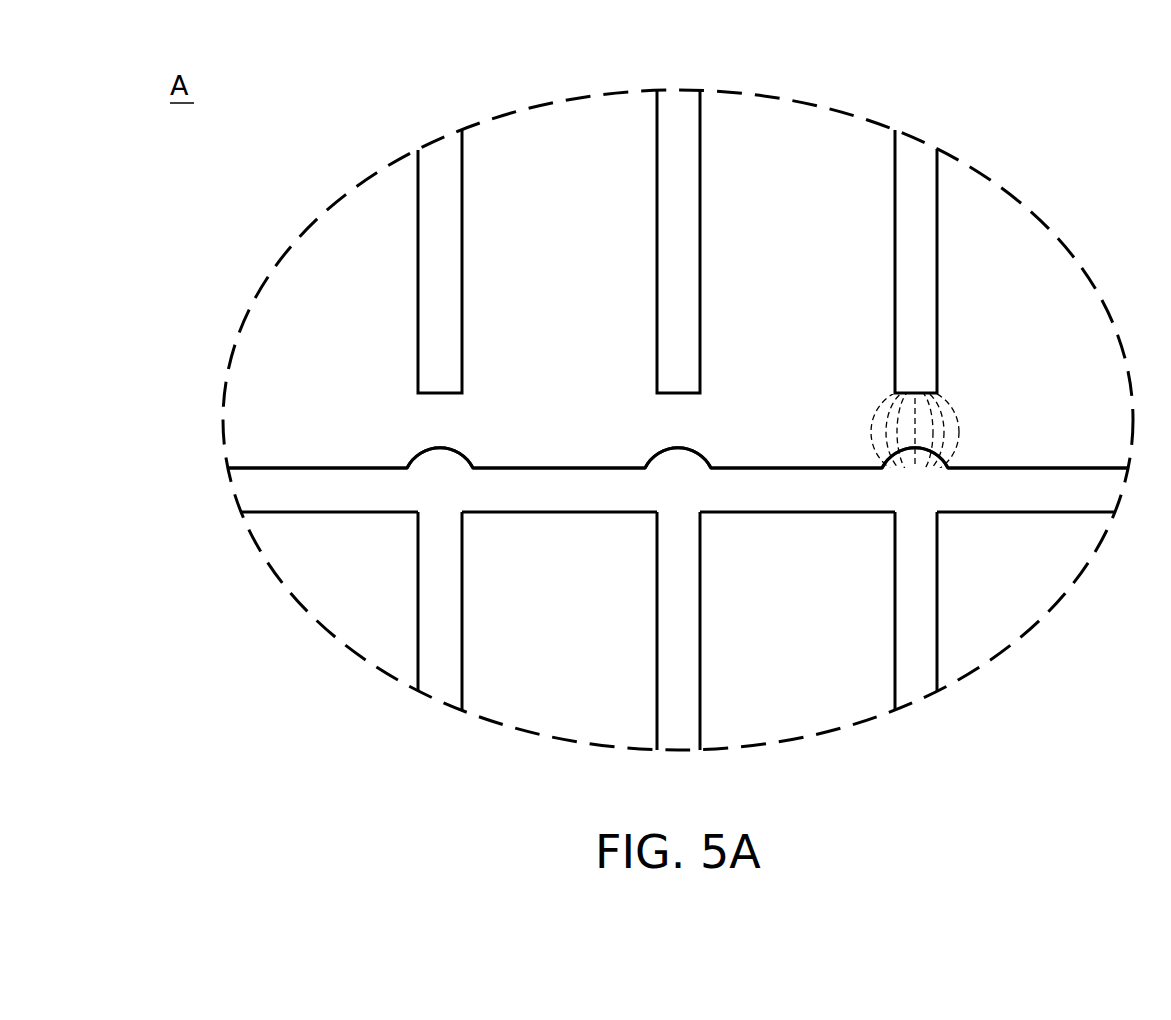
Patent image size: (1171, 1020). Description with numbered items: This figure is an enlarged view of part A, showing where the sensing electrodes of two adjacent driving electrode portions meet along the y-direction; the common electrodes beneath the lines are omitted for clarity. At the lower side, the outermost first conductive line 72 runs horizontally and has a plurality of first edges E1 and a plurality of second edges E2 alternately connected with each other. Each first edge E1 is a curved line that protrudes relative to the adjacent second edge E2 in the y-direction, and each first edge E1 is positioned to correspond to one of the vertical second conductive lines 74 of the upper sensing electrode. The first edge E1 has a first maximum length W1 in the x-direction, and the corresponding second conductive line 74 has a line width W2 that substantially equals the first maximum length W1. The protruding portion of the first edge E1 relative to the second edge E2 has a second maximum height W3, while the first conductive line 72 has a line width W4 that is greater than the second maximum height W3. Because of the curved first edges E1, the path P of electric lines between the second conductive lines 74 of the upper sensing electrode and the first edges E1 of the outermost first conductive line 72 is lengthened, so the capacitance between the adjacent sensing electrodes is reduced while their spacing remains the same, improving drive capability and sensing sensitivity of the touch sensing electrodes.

The first conductive line 72 is at (270, 512).
The second conductive line 74 is at (418, 183).
The first edge E1 is at (430, 450).
The second edge E2 is at (302, 468).
The path of electric lines P is at (945, 395).
The first maximum length W1 is at (473, 468).
The line width of the second conductive line W2 is at (385, 280).
The second maximum height W3 is at (678, 448).
The line width of the first conductive line W4 is at (797, 468).